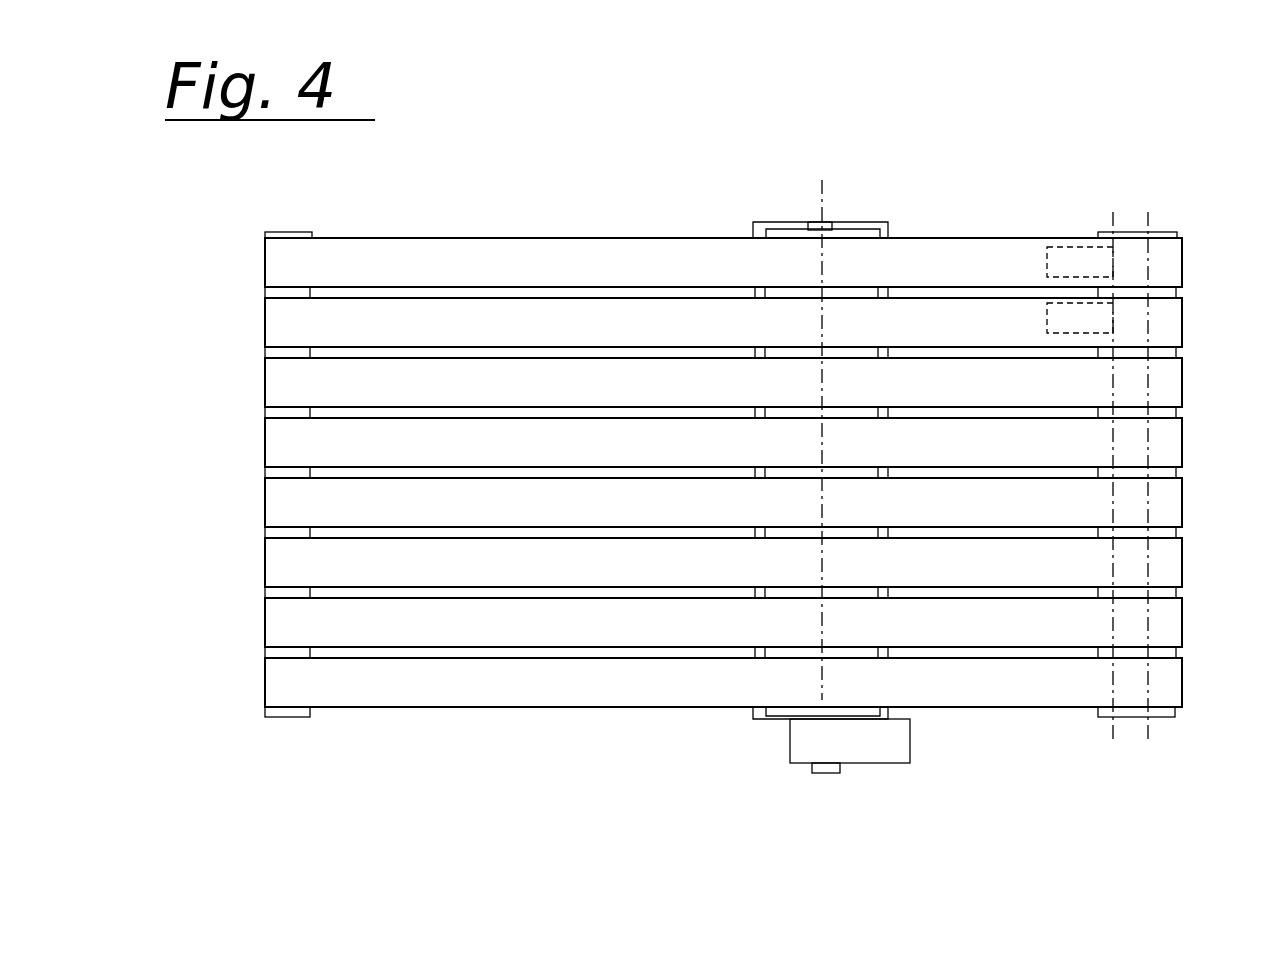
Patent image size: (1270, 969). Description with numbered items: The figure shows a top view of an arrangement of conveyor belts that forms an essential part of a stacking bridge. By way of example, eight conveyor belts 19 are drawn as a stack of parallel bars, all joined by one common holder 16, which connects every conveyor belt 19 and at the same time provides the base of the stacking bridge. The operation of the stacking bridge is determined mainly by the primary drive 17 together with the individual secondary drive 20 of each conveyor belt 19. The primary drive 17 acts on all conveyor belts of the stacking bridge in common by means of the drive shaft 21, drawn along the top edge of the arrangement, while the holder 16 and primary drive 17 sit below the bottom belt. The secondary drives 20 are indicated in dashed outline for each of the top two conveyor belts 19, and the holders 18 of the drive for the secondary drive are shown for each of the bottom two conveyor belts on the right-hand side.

The common holder 16 is at (762, 720).
The primary drive 17 is at (900, 760).
The holder of the drive for the secondary drive 18 is at (1160, 652).
The conveyor belt 19 is at (265, 688).
The secondary drive 20 is at (1086, 315).
The drive shaft 21 is at (812, 225).